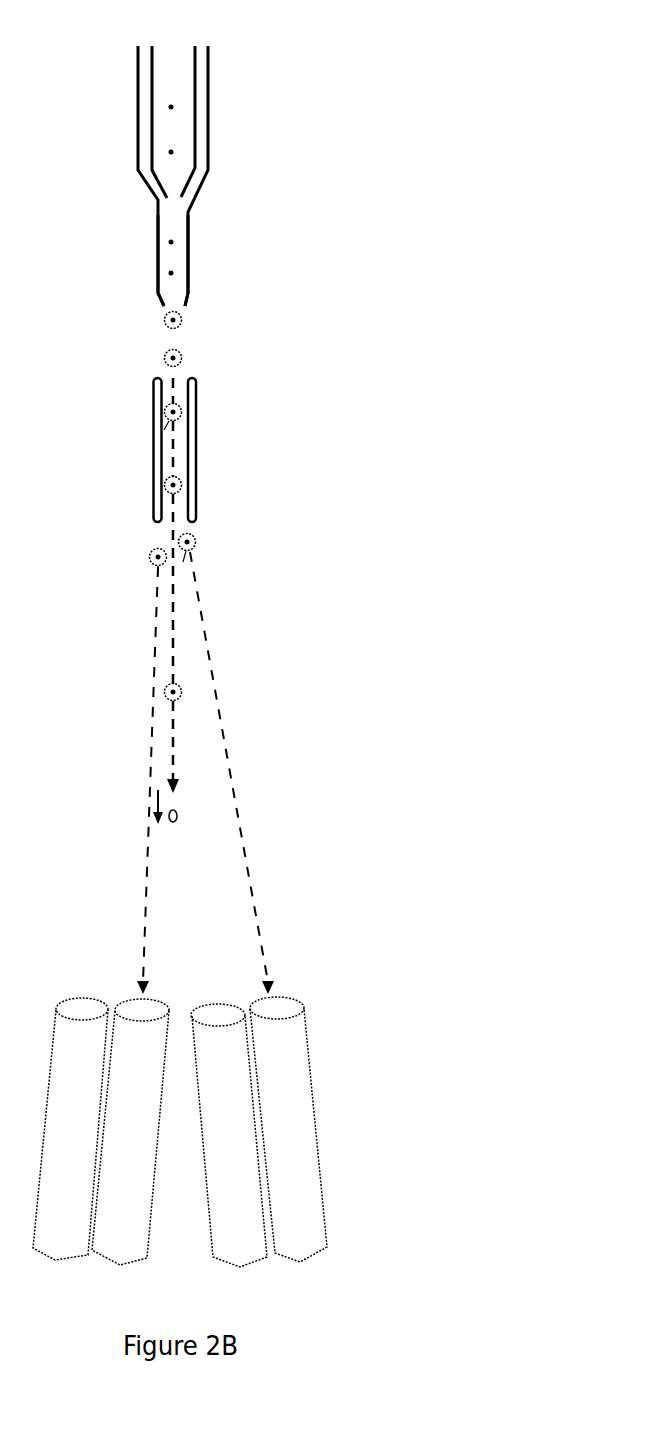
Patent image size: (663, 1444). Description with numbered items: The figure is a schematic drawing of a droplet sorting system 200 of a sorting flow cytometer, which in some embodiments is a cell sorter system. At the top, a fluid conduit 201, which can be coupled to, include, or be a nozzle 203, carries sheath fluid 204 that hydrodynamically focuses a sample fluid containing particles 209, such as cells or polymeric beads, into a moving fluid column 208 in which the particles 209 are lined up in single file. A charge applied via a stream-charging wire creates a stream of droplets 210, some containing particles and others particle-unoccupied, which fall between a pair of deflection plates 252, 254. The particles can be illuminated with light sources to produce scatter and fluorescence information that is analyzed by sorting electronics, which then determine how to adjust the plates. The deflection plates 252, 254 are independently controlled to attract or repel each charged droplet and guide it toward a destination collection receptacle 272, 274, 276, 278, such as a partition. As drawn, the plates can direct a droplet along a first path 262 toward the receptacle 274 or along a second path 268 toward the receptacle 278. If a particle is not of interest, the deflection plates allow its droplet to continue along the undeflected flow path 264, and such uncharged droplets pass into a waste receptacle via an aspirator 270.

The droplet sorting system 200 is at (298, 69).
The fluid conduit 201 is at (157, 250).
The nozzle 203 is at (177, 306).
The sheath fluid 204 is at (143, 84).
The moving fluid column 208 is at (171, 72).
The particles 209 is at (171, 151).
The stream of droplets 210 is at (167, 683).
The deflection plate 252 is at (153, 384).
The deflection plate 254 is at (197, 384).
The first path 262 is at (152, 766).
The flow path 264 is at (176, 756).
The second path 268 is at (230, 760).
The aspirator 270 is at (152, 805).
The collection receptacle 272 is at (83, 997).
The collection receptacle 274 is at (152, 1000).
The collection receptacle 276 is at (223, 1003).
The collection receptacle 278 is at (278, 997).